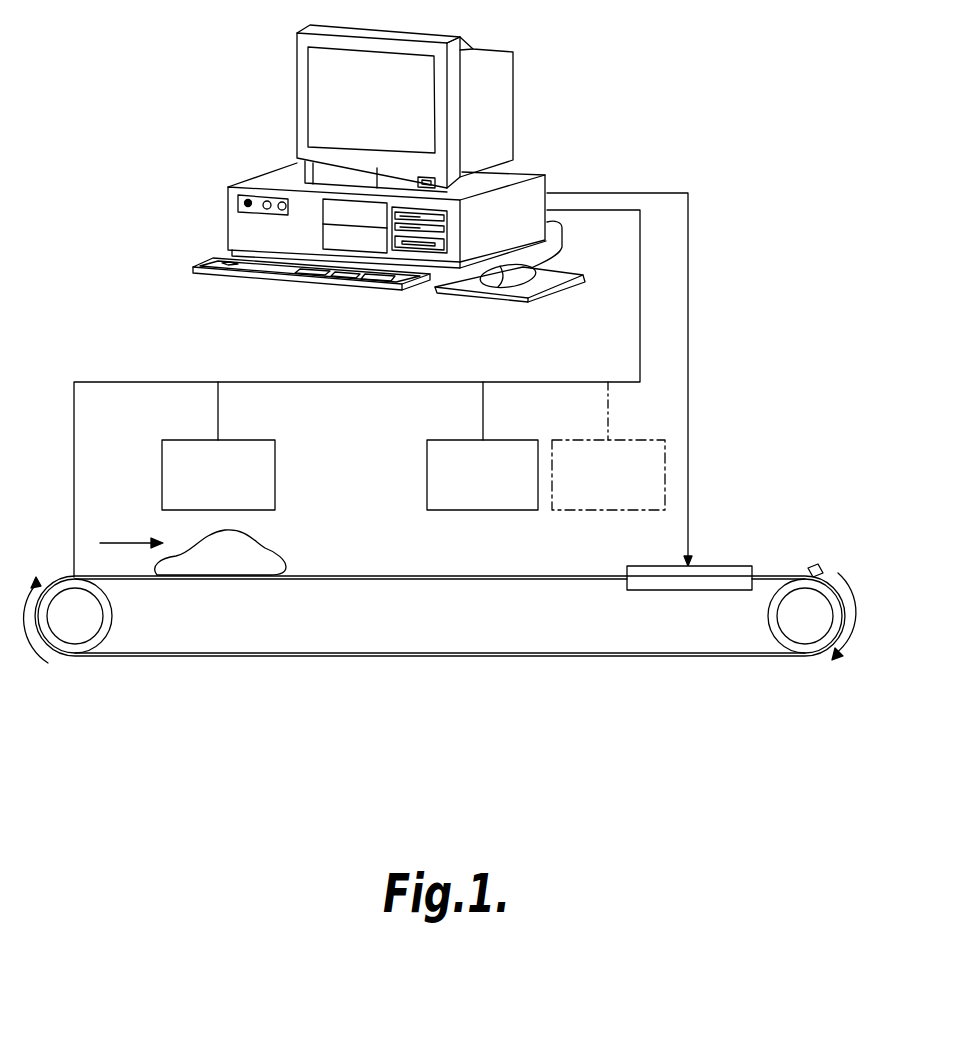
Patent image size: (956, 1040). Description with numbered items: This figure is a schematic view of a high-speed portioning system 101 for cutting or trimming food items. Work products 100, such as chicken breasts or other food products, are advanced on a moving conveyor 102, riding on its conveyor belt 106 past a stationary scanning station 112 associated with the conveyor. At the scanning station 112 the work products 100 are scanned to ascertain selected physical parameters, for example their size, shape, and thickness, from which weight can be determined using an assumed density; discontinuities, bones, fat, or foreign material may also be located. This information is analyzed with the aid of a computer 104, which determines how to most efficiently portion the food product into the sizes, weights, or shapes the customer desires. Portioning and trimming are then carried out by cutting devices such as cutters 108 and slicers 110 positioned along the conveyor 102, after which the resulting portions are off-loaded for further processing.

The work products 100 is at (252, 543).
The system 101 is at (808, 111).
The conveyor 102 is at (243, 668).
The computer 104 is at (225, 161).
The conveyor belt 106 is at (447, 577).
The cutters 108 is at (427, 470).
The slicers 110 is at (633, 440).
The scanning station 112 is at (162, 470).